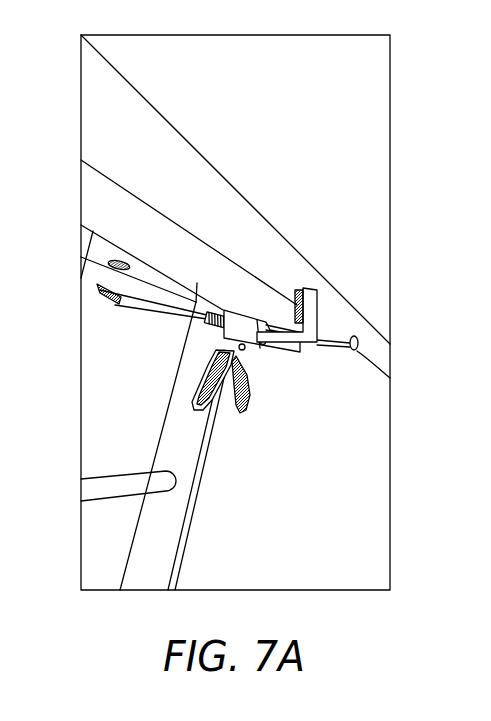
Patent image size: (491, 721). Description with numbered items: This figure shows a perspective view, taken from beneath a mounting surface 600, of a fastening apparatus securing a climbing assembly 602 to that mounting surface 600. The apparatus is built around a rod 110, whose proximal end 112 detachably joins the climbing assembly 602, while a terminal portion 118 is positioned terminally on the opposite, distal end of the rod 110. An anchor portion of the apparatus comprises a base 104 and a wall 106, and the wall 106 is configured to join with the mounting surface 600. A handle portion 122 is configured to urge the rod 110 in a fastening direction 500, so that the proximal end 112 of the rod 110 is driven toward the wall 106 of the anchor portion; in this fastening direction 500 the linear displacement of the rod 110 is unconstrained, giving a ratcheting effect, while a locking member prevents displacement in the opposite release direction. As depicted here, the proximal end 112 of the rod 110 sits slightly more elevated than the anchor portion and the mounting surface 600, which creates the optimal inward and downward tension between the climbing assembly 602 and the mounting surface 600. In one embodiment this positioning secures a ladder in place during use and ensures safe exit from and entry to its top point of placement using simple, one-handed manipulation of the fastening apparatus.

The fastening direction 500 is at (332, 401).
The base 104 is at (287, 345).
The wall 106 is at (318, 302).
The rod 110 is at (329, 348).
The terminal portion 118 is at (358, 344).
The handle portion 122 is at (272, 406).
The mounting surface 600 is at (262, 302).
The climbing assembly 602 is at (98, 283).
The proximal end 112 is at (118, 304).